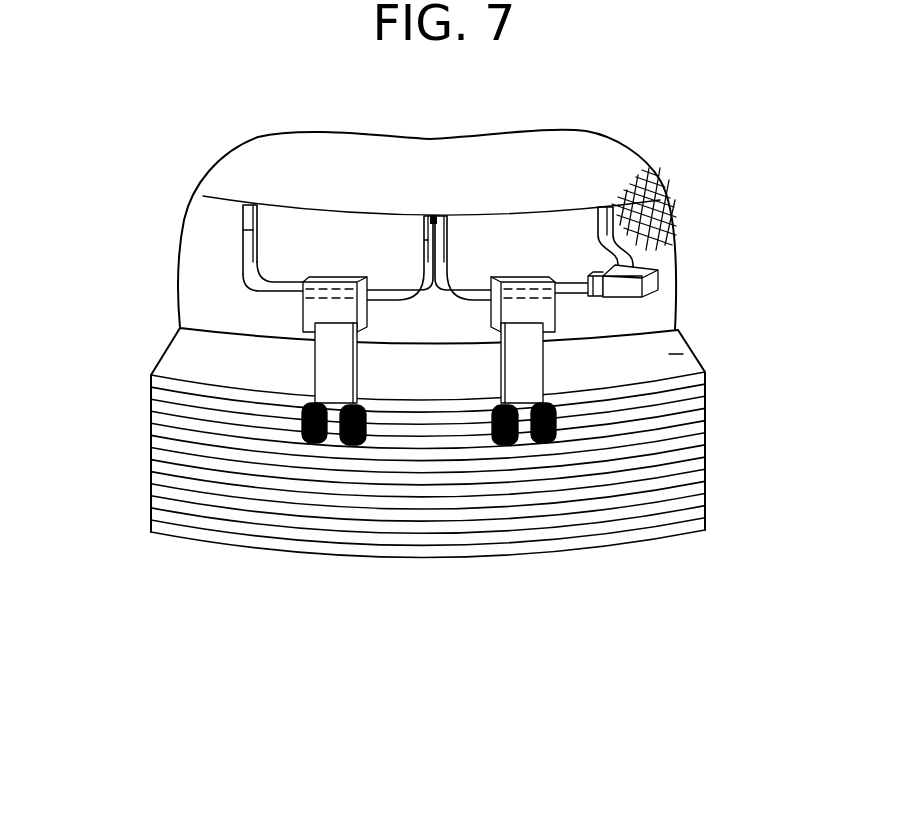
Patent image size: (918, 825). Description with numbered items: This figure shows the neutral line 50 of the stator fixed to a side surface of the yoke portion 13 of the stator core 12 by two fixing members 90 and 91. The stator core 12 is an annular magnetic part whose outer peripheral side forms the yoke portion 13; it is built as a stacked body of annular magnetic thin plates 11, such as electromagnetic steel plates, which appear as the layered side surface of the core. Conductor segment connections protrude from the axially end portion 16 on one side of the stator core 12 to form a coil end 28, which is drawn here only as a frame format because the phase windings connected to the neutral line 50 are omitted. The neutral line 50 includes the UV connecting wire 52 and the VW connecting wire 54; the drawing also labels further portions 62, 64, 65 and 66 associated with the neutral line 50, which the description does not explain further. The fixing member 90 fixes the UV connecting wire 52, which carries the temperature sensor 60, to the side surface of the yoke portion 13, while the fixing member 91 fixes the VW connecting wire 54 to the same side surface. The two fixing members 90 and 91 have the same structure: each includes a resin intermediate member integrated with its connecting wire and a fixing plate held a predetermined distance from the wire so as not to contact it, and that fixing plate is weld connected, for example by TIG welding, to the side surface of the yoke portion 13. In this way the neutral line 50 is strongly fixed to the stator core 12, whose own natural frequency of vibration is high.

The magnetic thin plate 11 is at (158, 443).
The stator core 12 is at (695, 432).
The yoke portion 13 is at (176, 355).
The axially end portion 16 is at (680, 342).
The coil end 28 is at (607, 152).
The neutral line 50 is at (246, 262).
The UV connecting wire 52 is at (577, 283).
The VW connecting wire 54 is at (280, 284).
The temperature sensor 60 is at (640, 290).
The terminal 62 is at (598, 224).
The terminal 64 is at (446, 237).
The terminal 65 is at (423, 235).
The terminal 66 is at (244, 222).
The fixing member 90 is at (530, 438).
The fixing member 91 is at (328, 438).